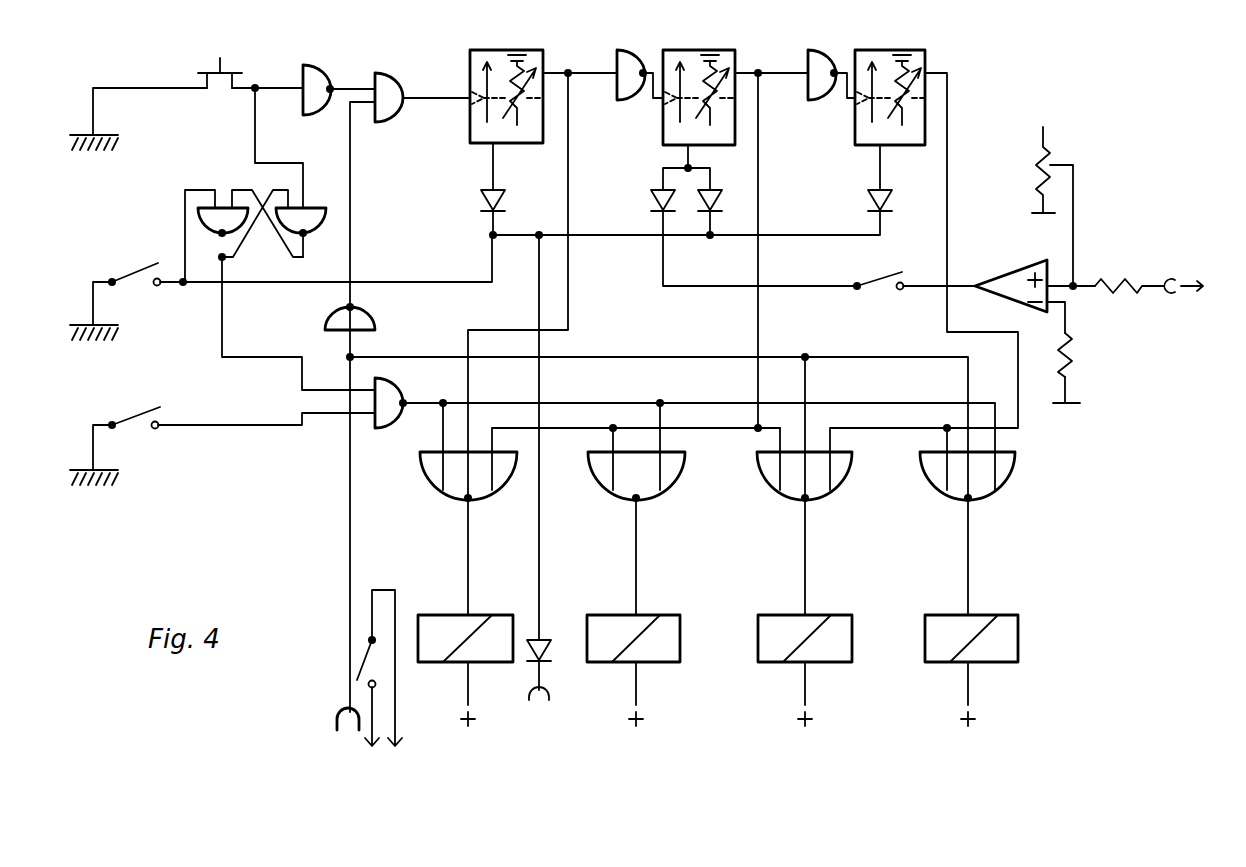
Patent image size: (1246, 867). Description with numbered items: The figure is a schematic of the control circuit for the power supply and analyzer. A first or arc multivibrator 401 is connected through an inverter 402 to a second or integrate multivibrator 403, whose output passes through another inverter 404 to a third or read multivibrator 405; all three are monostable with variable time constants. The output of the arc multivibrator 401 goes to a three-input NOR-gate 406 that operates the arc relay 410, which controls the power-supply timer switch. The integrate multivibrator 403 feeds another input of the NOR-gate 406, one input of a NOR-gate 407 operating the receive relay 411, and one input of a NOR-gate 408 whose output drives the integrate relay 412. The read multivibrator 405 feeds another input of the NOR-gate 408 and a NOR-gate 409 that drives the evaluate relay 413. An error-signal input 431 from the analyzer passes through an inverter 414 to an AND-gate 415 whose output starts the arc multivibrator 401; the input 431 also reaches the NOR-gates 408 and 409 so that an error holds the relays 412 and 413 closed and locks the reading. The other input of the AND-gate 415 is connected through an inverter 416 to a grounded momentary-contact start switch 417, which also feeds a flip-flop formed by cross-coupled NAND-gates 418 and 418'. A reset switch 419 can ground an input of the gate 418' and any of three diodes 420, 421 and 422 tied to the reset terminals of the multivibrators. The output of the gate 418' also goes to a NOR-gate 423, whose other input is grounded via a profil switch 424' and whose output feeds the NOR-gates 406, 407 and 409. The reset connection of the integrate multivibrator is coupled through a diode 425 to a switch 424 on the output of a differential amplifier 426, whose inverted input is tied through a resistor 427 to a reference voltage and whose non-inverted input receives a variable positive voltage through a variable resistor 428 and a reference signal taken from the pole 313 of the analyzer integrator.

The first multivibrator 401 is at (480, 60).
The inverter 402 is at (622, 96).
The second multivibrator 403 is at (672, 123).
The inverter 404 is at (812, 92).
The third multivibrator 405 is at (862, 123).
The three-input NOR-gate 406 is at (490, 490).
The NOR-gate 407 is at (658, 490).
The NOR-gate 408 is at (825, 490).
The NOR-gate 409 is at (982, 490).
The arc relay 410 is at (493, 655).
The receive relay 411 is at (655, 655).
The integrate relay 412 is at (826, 655).
The evaluate relay 413 is at (990, 655).
The inverter 414 is at (366, 320).
The AND-gate 415 is at (380, 83).
The inverter 416 is at (304, 83).
The momentary-contact start switch 417 is at (216, 68).
The NAND-gate 418 is at (311, 216).
The NAND-gate 418' is at (221, 224).
The reset switch 419 is at (140, 273).
The diode 420 is at (488, 196).
The diode 421 is at (735, 183).
The diode 422 is at (875, 196).
The NOR-gate 423 is at (386, 395).
The switch 424 is at (862, 273).
The profil switch 424' is at (131, 407).
The diode 425 is at (655, 200).
The differential amplifier 426 is at (1018, 282).
The resistor 427 is at (1077, 350).
The variable resistor 428 is at (1040, 167).
The error-signal input 431 is at (338, 718).
The pole of the integrator 313 is at (1170, 287).